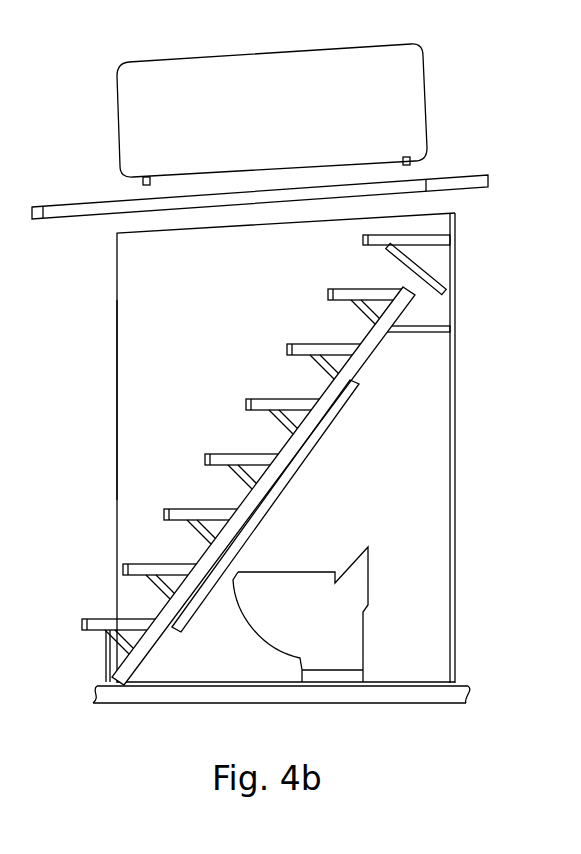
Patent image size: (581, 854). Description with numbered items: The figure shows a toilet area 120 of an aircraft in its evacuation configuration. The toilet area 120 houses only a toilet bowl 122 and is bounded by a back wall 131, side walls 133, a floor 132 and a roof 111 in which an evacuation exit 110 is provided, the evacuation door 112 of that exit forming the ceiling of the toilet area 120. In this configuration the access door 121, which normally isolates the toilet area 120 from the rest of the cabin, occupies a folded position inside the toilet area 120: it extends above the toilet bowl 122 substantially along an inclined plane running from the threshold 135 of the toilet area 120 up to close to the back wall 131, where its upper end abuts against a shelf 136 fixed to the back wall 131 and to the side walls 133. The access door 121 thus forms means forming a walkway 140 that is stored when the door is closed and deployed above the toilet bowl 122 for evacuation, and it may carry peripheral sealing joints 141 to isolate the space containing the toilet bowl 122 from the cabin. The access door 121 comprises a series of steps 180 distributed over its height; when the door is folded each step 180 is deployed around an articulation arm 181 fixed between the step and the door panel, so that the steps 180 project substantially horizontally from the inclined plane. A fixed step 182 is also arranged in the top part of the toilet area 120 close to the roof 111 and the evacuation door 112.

The evacuation exit 110 is at (400, 185).
The roof 111 is at (488, 183).
The evacuation door 112 is at (410, 74).
The toilet area 120 is at (98, 472).
The access door 121 is at (330, 398).
The toilet bowl 122 is at (336, 675).
The back wall 131 is at (456, 478).
The floor 132 is at (137, 700).
The side walls 133 is at (148, 300).
The threshold 135 is at (106, 681).
The shelf 136 is at (445, 329).
The means forming a walkway 140 is at (298, 468).
The peripheral sealing joints 141 is at (396, 320).
The steps 180 is at (287, 351).
The articulation arm 181 is at (337, 366).
The fixed step 182 is at (440, 242).